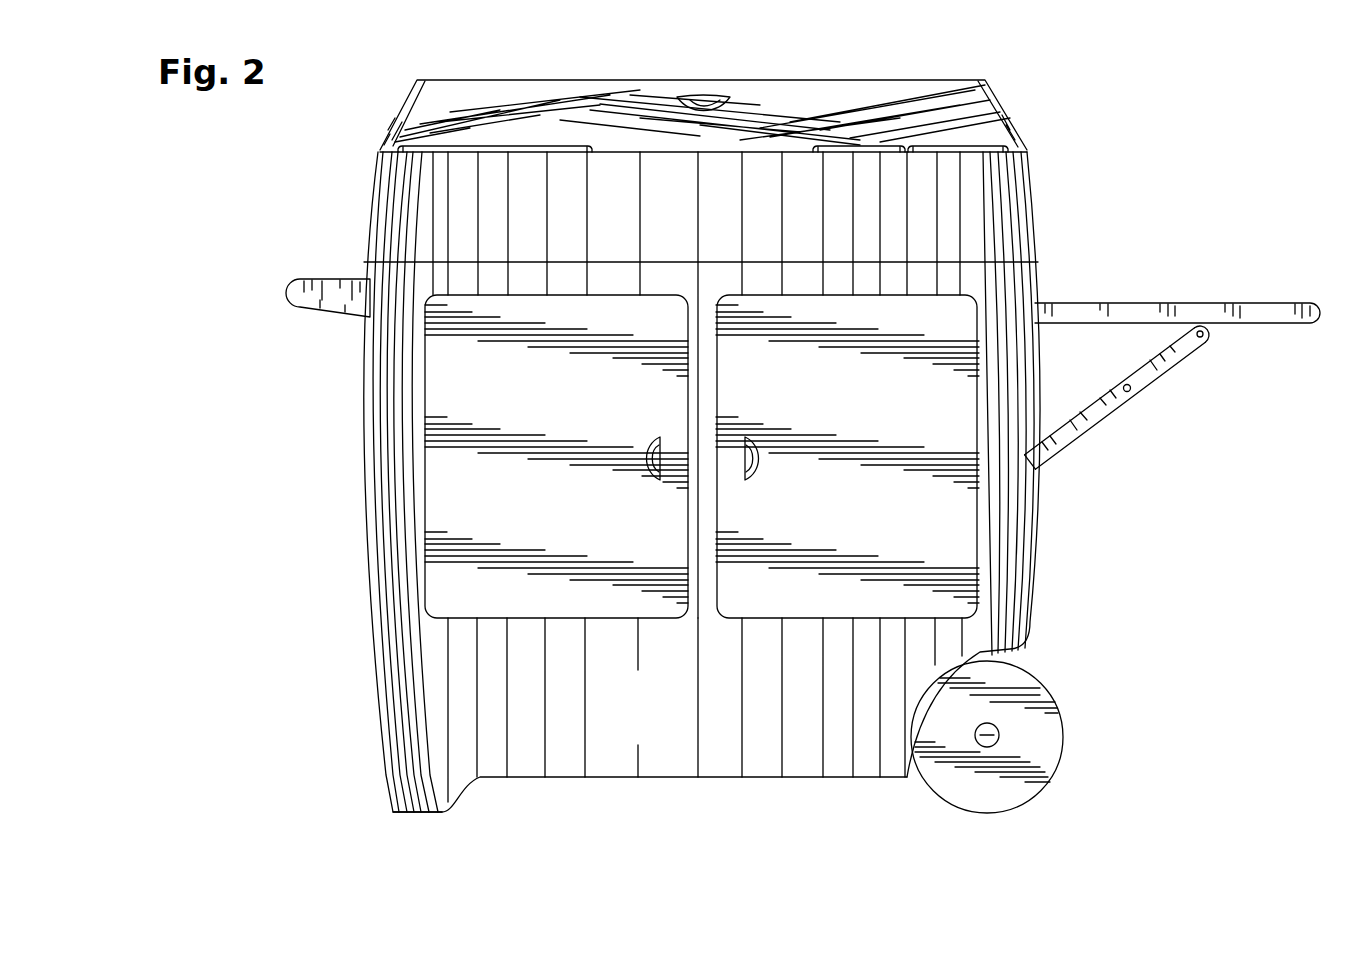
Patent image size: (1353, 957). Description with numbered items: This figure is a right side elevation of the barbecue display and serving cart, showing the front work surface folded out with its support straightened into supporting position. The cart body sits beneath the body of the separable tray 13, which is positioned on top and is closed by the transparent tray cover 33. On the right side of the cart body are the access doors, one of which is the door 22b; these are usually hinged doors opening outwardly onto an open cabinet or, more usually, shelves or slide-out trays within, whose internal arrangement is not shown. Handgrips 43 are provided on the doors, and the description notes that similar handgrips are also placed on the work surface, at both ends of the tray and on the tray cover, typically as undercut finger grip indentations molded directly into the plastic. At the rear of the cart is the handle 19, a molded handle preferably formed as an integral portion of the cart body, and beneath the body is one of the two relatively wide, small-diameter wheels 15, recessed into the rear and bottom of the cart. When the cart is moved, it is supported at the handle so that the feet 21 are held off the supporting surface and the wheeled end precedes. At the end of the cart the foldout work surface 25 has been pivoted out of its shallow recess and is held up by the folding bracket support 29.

The body of the separable tray 13 is at (1008, 200).
The wheel 15 is at (1052, 724).
The handle 19 is at (322, 290).
The feet 21 is at (430, 813).
The access door 22b is at (756, 604).
The foldout work surface 25 is at (1171, 303).
The folding bracket support 29 is at (1133, 398).
The transparent tray cover 33 is at (978, 120).
The handgrip 43 is at (662, 450).